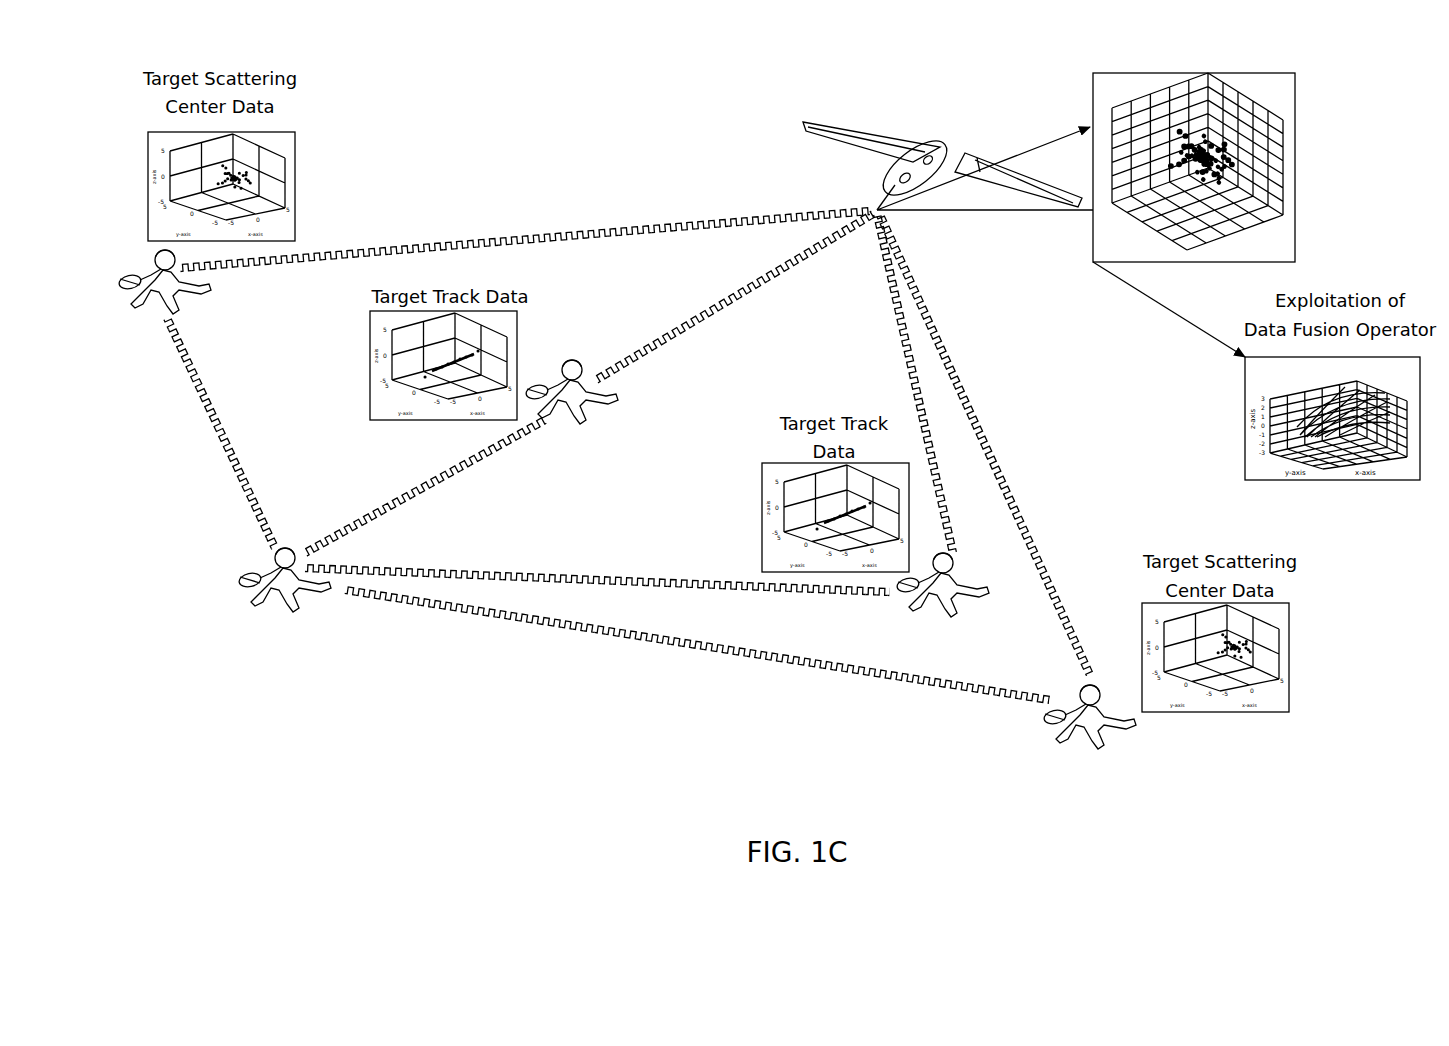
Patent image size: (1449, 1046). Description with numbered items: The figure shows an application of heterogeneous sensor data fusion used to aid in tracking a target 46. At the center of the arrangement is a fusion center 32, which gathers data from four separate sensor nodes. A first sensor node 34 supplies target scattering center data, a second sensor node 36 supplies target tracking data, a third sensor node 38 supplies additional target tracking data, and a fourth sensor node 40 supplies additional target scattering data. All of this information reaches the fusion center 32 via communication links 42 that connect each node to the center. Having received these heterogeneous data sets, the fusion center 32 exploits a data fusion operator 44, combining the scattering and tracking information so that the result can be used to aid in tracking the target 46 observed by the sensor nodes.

The fusion center 32 is at (942, 138).
The first sensor node 34 is at (148, 329).
The second sensor node 36 is at (576, 437).
The third sensor node 38 is at (959, 612).
The fourth sensor node 40 is at (1099, 729).
The communication links 42 is at (806, 523).
The data fusion operator 44 is at (1210, 151).
The target 46 is at (282, 596).